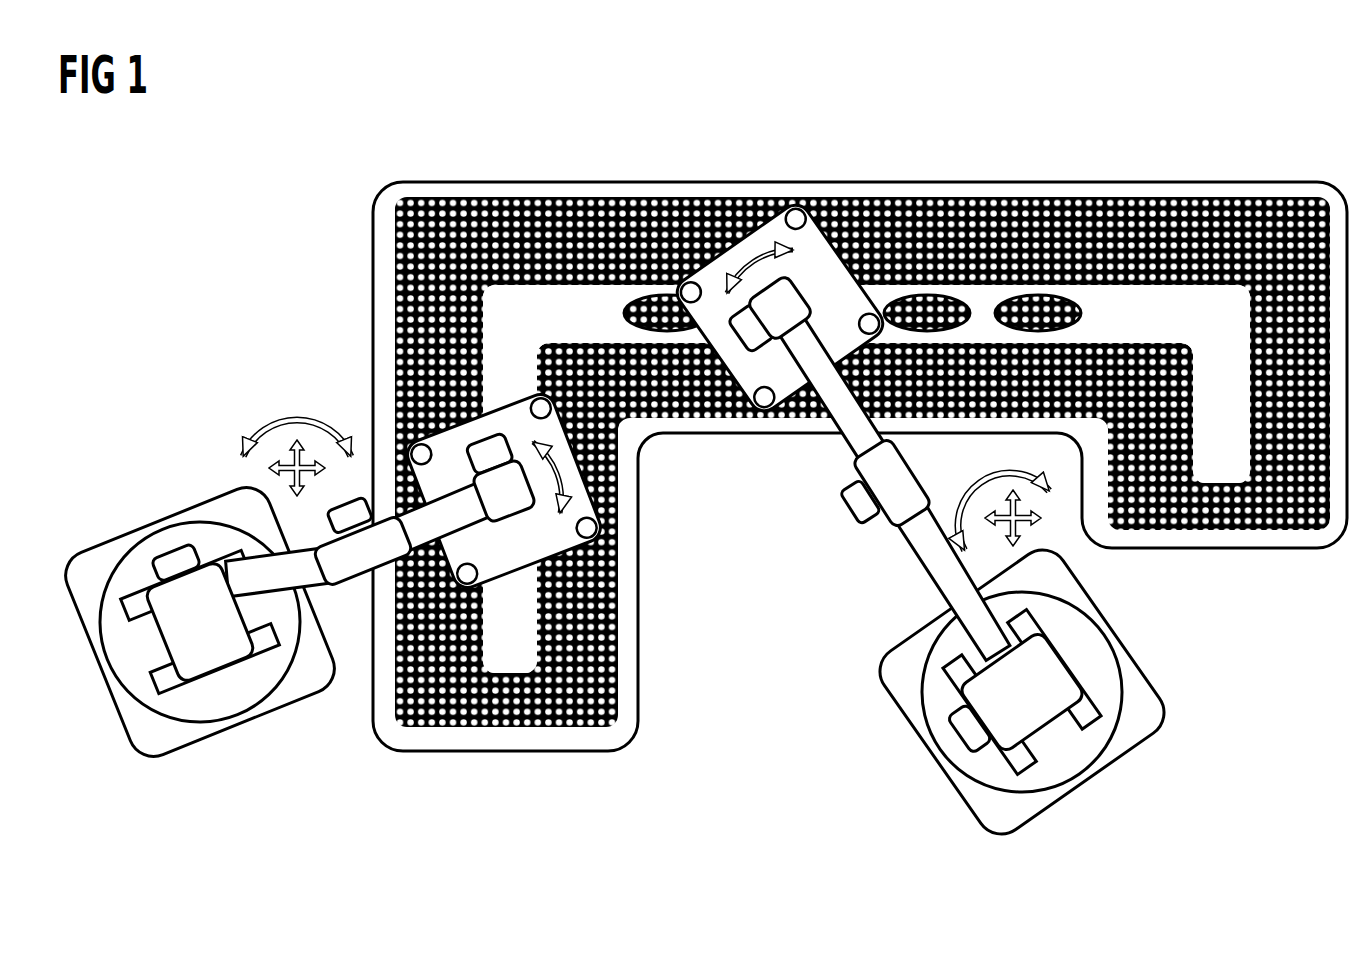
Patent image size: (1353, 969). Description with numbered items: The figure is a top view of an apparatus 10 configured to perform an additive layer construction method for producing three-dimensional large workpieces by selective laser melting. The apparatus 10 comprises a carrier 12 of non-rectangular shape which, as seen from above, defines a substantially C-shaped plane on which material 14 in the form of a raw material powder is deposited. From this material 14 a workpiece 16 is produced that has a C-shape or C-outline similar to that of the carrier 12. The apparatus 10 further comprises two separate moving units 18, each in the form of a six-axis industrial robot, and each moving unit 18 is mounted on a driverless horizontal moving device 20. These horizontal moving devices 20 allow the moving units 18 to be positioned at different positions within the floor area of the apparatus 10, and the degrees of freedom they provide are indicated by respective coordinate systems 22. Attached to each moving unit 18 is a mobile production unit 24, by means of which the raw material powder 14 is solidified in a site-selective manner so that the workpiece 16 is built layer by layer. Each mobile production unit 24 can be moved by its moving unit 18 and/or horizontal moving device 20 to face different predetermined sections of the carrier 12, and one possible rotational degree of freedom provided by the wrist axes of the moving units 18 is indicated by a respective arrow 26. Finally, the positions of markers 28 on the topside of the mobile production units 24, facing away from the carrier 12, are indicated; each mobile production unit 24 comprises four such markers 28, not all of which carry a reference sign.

The apparatus 10 is at (860, 404).
The carrier 12 is at (1054, 190).
The material 14 is at (955, 200).
The workpiece 16 is at (492, 313).
The moving unit 18 is at (352, 522).
The horizontal moving device 20 is at (297, 693).
The coordinate system 22 is at (245, 409).
The mobile production unit 24 is at (792, 396).
The arrow 26 is at (750, 258).
The marker 28 is at (760, 405).